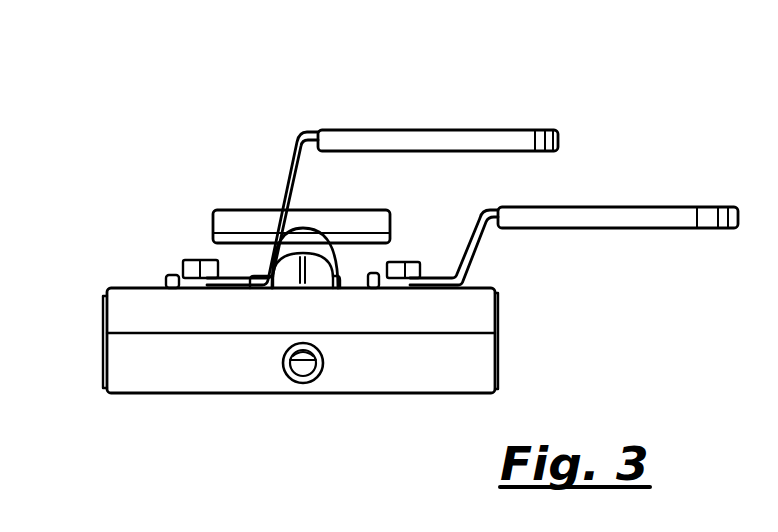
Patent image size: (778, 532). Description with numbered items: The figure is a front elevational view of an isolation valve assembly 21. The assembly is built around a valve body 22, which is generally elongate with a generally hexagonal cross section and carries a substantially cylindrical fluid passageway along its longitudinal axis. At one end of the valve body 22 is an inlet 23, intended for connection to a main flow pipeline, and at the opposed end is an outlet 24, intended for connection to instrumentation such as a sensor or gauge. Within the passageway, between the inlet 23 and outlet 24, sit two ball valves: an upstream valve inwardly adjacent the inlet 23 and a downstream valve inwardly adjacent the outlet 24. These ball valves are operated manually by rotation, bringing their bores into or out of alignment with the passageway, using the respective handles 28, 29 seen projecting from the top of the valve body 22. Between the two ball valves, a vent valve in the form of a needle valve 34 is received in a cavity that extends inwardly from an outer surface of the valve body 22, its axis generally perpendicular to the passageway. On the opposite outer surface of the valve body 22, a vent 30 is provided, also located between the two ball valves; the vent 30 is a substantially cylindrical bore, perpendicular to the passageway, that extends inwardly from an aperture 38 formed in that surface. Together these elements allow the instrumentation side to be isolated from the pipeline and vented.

The isolation valve assembly 21 is at (619, 73).
The valve body 22 is at (133, 288).
The inlet 23 is at (103, 345).
The outlet 24 is at (497, 333).
The handle 28 is at (452, 139).
The handle 29 is at (635, 213).
The vent 30 is at (326, 368).
The needle valve 34 is at (285, 246).
The aperture 38 is at (293, 373).